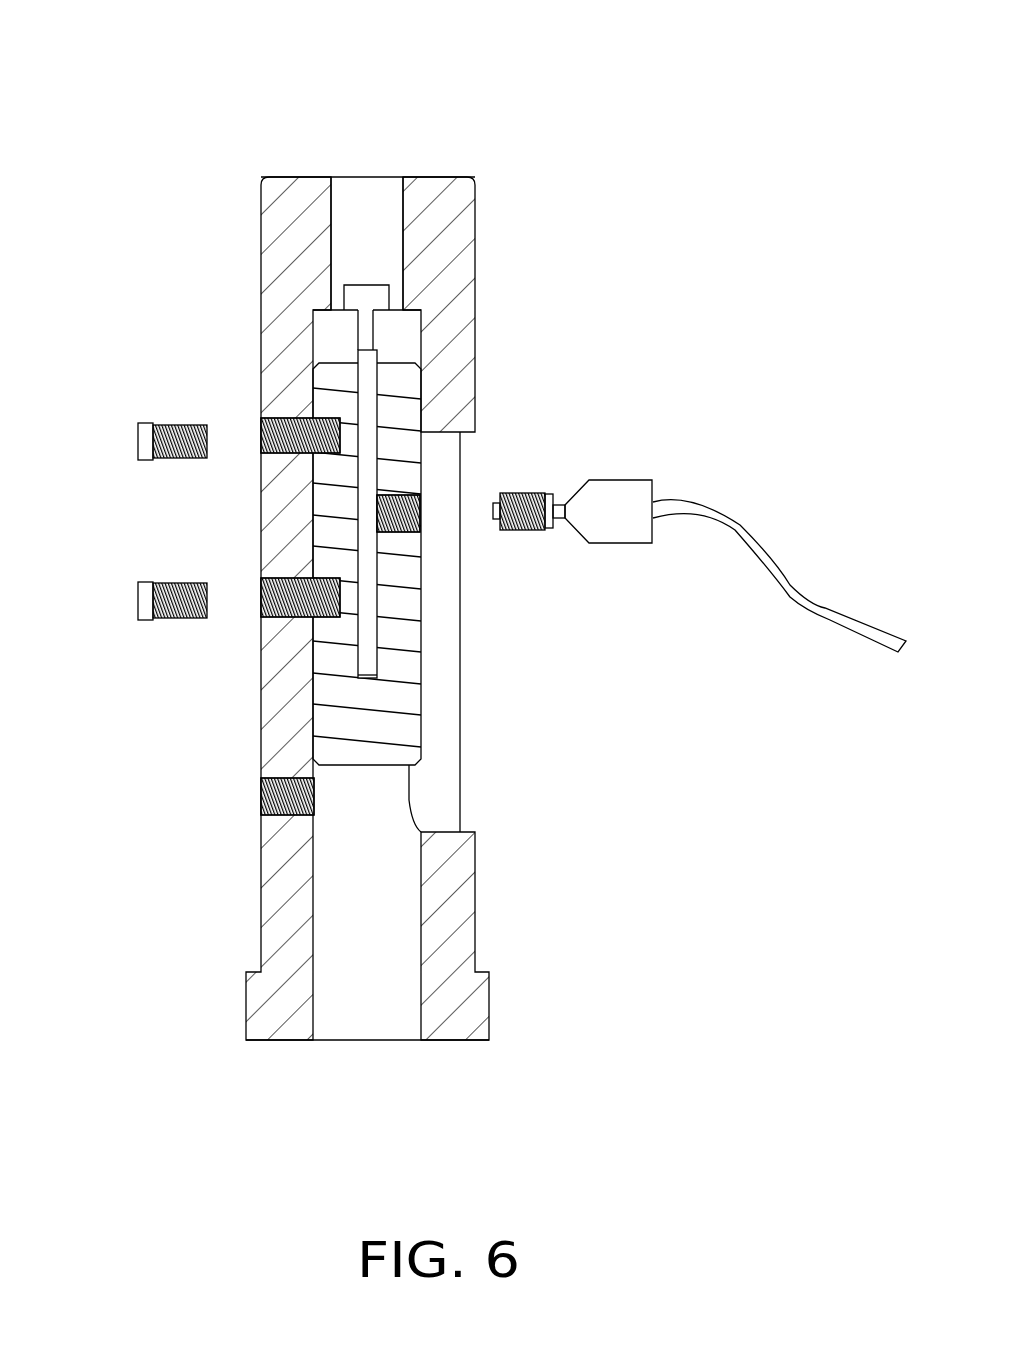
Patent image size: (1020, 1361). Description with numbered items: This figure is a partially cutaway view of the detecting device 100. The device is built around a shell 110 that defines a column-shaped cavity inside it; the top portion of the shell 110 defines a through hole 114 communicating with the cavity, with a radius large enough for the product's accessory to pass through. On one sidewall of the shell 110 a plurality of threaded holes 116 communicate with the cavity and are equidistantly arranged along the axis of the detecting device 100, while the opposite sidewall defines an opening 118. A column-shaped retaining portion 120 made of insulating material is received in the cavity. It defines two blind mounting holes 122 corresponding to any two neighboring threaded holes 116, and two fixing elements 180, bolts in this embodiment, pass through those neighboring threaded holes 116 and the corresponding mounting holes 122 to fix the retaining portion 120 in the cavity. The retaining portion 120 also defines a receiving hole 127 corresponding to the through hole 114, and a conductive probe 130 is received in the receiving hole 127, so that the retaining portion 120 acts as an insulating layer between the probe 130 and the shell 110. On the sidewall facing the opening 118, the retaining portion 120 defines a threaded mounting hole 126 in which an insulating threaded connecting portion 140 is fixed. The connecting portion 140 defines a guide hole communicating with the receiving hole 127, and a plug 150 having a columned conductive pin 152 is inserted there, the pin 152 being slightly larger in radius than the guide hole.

The detecting device 100 is at (390, 40).
The shell 110 is at (433, 270).
The through hole 114 is at (367, 206).
The threaded holes 116 is at (280, 583).
The opening 118 is at (450, 621).
The retaining portion 120 is at (403, 424).
The mounting holes 122 is at (315, 420).
The mounting hole 126 is at (405, 495).
The receiving hole 127 is at (367, 661).
The conductive probe 130 is at (372, 297).
The connecting portion 140 is at (523, 530).
The plug 150 is at (623, 510).
The pin 152 is at (558, 510).
The fixing elements 180 is at (178, 585).